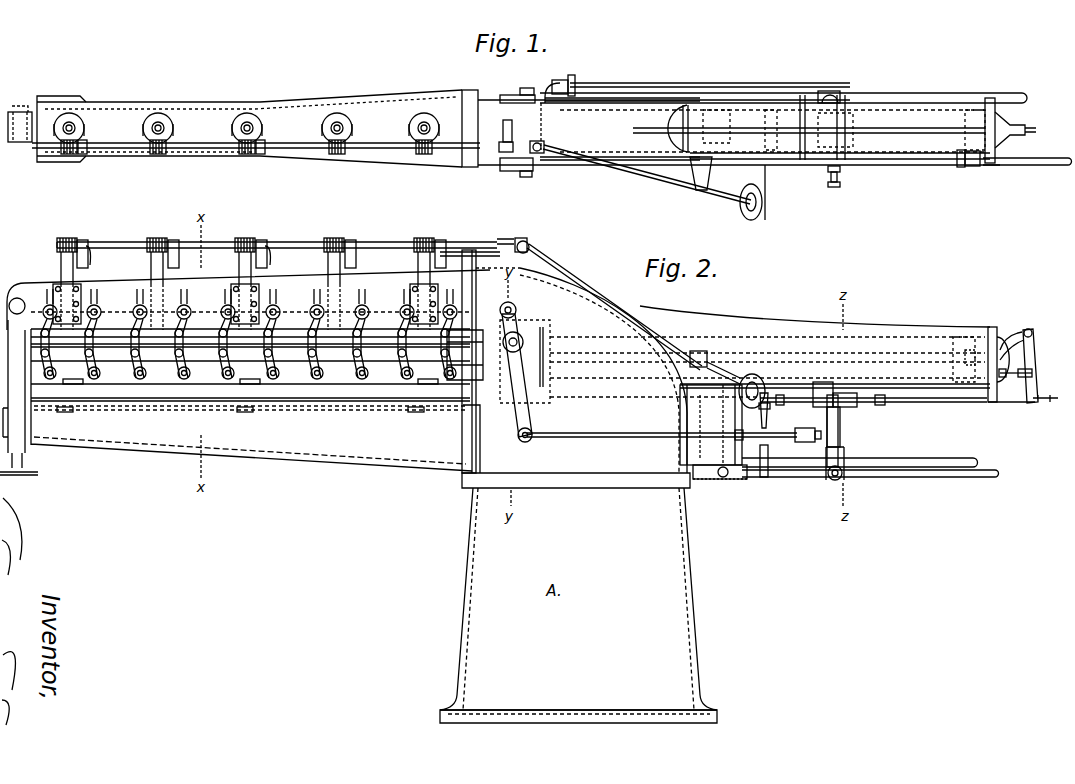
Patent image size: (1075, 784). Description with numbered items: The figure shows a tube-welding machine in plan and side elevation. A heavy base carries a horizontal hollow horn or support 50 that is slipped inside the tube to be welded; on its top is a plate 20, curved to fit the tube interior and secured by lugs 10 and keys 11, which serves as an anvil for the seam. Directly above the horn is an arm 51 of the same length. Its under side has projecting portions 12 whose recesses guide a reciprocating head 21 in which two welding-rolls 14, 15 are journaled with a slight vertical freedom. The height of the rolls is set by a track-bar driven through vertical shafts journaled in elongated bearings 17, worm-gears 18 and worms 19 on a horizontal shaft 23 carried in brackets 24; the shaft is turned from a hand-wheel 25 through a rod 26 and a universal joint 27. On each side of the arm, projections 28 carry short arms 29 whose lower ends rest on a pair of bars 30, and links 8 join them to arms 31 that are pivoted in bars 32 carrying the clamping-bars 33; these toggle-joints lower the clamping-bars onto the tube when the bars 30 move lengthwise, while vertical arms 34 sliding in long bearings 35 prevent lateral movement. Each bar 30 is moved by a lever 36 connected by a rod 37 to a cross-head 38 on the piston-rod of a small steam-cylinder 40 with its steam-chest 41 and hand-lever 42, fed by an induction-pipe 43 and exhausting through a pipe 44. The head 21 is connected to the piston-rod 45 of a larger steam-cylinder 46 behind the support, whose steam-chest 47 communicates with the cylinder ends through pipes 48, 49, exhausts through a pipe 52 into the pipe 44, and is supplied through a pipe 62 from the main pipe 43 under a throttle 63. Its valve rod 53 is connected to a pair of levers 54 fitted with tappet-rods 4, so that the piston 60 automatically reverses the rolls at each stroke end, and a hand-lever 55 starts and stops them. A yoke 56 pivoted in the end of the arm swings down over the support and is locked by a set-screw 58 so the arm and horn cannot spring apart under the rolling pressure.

In FIG. 2, the tappet-rods 4 is at (1012, 377).
In FIG. 2, the links 8 is at (137, 344).
In FIG. 2, the lugs 10 is at (84, 412).
In FIG. 2, the keys 11 is at (62, 412).
In FIG. 2, the projecting portions 12 is at (429, 433).
In FIG. 2, the welding-roll 14 is at (478, 322).
In FIG. 2, the welding-roll 15 is at (453, 395).
In FIG. 2, the elongated bearings 17 is at (61, 259).
In FIG. 1, the worm-gears 18 is at (441, 122).
In FIG. 2, the worm-gears 18 is at (345, 235).
In FIG. 1, the worms 19 is at (69, 155).
In FIG. 2, the worms 19 is at (82, 240).
In FIG. 2, the plate 20 is at (364, 402).
In FIG. 2, the reciprocating head 21 is at (475, 355).
In FIG. 1, the horizontal shaft 23 is at (297, 150).
In FIG. 2, the horizontal shaft 23 is at (290, 242).
In FIG. 1, the brackets 24 is at (88, 156).
In FIG. 2, the brackets 24 is at (90, 259).
In FIG. 1, the hand-wheel 25 is at (740, 207).
In FIG. 2, the hand-wheel 25 is at (751, 384).
In FIG. 1, the rod 26 is at (645, 172).
In FIG. 2, the rod 26 is at (584, 283).
In FIG. 1, the universal joint 27 is at (542, 145).
In FIG. 2, the universal joint 27 is at (526, 242).
In FIG. 2, the projections 28 is at (101, 307).
In FIG. 2, the short arms 29 is at (96, 322).
In FIG. 2, the bars 30 is at (289, 347).
In FIG. 2, the arms 31 is at (95, 362).
In FIG. 2, the bars 32 is at (250, 378).
In FIG. 2, the clamping-bars 33 is at (250, 393).
In FIG. 2, the vertical arms 34 is at (50, 358).
In FIG. 2, the long bearings 35 is at (55, 290).
In FIG. 1, the lever 36 is at (505, 95).
In FIG. 2, the lever 36 is at (530, 418).
In FIG. 1, the rod 37 is at (600, 96).
In FIG. 2, the rod 37 is at (568, 433).
In FIG. 1, the cross-head 38 is at (816, 166).
In FIG. 2, the cross-head 38 is at (806, 441).
In FIG. 2, the steam-cylinder 40 is at (711, 425).
In FIG. 2, the steam-chest 41 is at (718, 479).
In FIG. 2, the hand-lever 42 is at (760, 476).
In FIG. 1, the induction-pipe 43 is at (1022, 166).
In FIG. 2, the induction-pipe 43 is at (791, 478).
In FIG. 1, the exhaust-pipe 44 is at (894, 97).
In FIG. 2, the exhaust-pipe 44 is at (772, 458).
In FIG. 2, the piston-rod 45 is at (854, 358).
In FIG. 1, the steam-cylinder 46 is at (757, 142).
In FIG. 2, the steam-cylinder 46 is at (710, 358).
In FIG. 2, the steam-chest 47 is at (847, 407).
In FIG. 1, the pipe 48 is at (655, 84).
In FIG. 1, the pipe 49 is at (905, 162).
In FIG. 2, the pipe 49 is at (898, 390).
In FIG. 2, the horn or support 50 is at (312, 435).
In FIG. 1, the arm 51 is at (257, 128).
In FIG. 2, the arm 51 is at (289, 282).
In FIG. 1, the pipe 52 is at (826, 90).
In FIG. 2, the pipe 52 is at (827, 421).
In FIG. 2, the valve rod 53 is at (942, 402).
In FIG. 2, the levers 54 is at (512, 380).
In FIG. 1, the hand-lever 55 is at (766, 178).
In FIG. 2, the hand-lever 55 is at (768, 408).
In FIG. 1, the yoke 56 is at (20, 124).
In FIG. 2, the yoke 56 is at (14, 383).
In FIG. 2, the set-screw 58 is at (28, 475).
In FIG. 2, the piston 60 is at (962, 359).
In FIG. 2, the pipe 62 is at (840, 441).
In FIG. 2, the throttle 63 is at (836, 481).